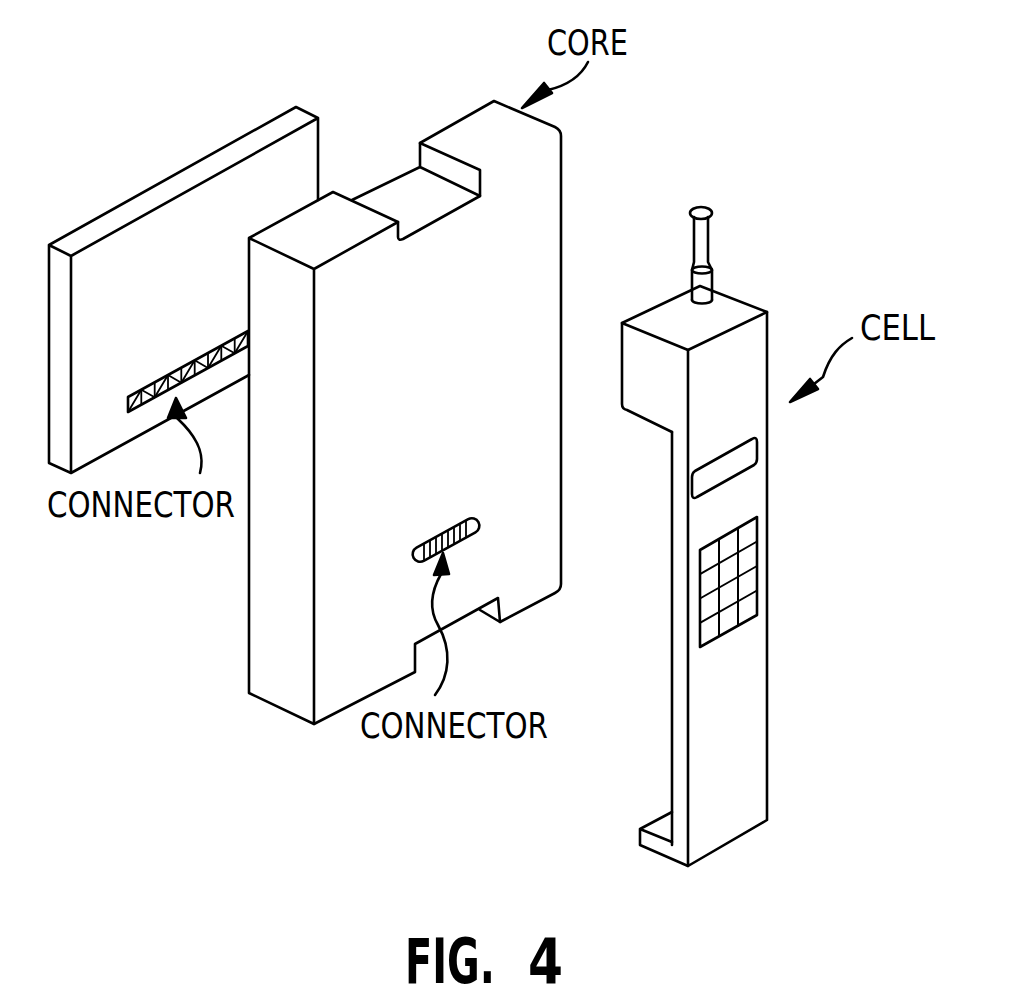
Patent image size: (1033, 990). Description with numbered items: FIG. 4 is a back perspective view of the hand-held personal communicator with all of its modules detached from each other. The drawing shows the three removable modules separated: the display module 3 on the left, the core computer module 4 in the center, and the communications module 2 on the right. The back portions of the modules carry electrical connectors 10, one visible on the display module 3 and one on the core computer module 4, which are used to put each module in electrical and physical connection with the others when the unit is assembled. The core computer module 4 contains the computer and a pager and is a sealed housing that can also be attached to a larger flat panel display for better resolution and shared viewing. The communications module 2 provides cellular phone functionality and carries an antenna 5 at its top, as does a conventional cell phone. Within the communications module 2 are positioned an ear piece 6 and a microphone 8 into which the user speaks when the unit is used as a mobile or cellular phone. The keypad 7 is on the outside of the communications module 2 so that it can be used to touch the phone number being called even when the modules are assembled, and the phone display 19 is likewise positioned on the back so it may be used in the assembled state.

The communications module 2 is at (724, 297).
The display module 3 is at (308, 146).
The core computer module 4 is at (566, 258).
The antenna 5 is at (706, 208).
The ear piece 6 is at (617, 402).
The keypad 7 is at (752, 533).
The microphone 8 is at (653, 827).
The electrical connectors 10 is at (168, 371).
The phone display 19 is at (755, 448).